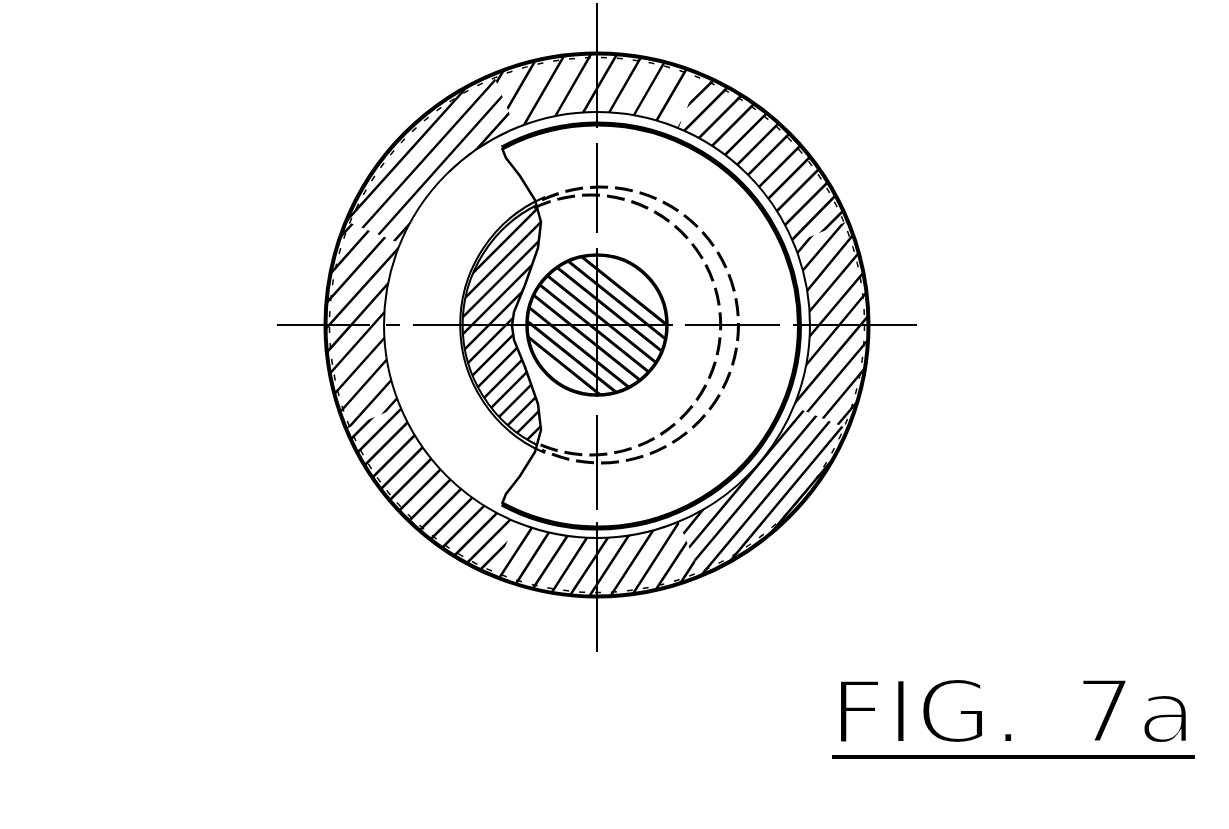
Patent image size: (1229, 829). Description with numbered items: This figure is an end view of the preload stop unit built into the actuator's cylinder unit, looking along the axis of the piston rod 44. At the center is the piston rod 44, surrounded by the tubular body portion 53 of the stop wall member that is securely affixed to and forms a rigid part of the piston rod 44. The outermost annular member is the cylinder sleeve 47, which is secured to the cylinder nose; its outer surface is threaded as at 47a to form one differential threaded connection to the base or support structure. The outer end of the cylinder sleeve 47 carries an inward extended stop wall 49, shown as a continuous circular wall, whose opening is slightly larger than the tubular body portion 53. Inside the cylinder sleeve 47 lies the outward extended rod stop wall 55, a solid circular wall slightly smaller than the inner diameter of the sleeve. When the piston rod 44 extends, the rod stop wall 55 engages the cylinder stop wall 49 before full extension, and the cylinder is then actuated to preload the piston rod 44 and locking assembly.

The piston rod 44 is at (563, 360).
The cylinder sleeve 47 is at (863, 273).
The threaded outer surface 47a is at (848, 435).
The stop wall 49 is at (422, 363).
The tubular body portion 53 is at (503, 248).
The rod stop wall 55 is at (765, 205).